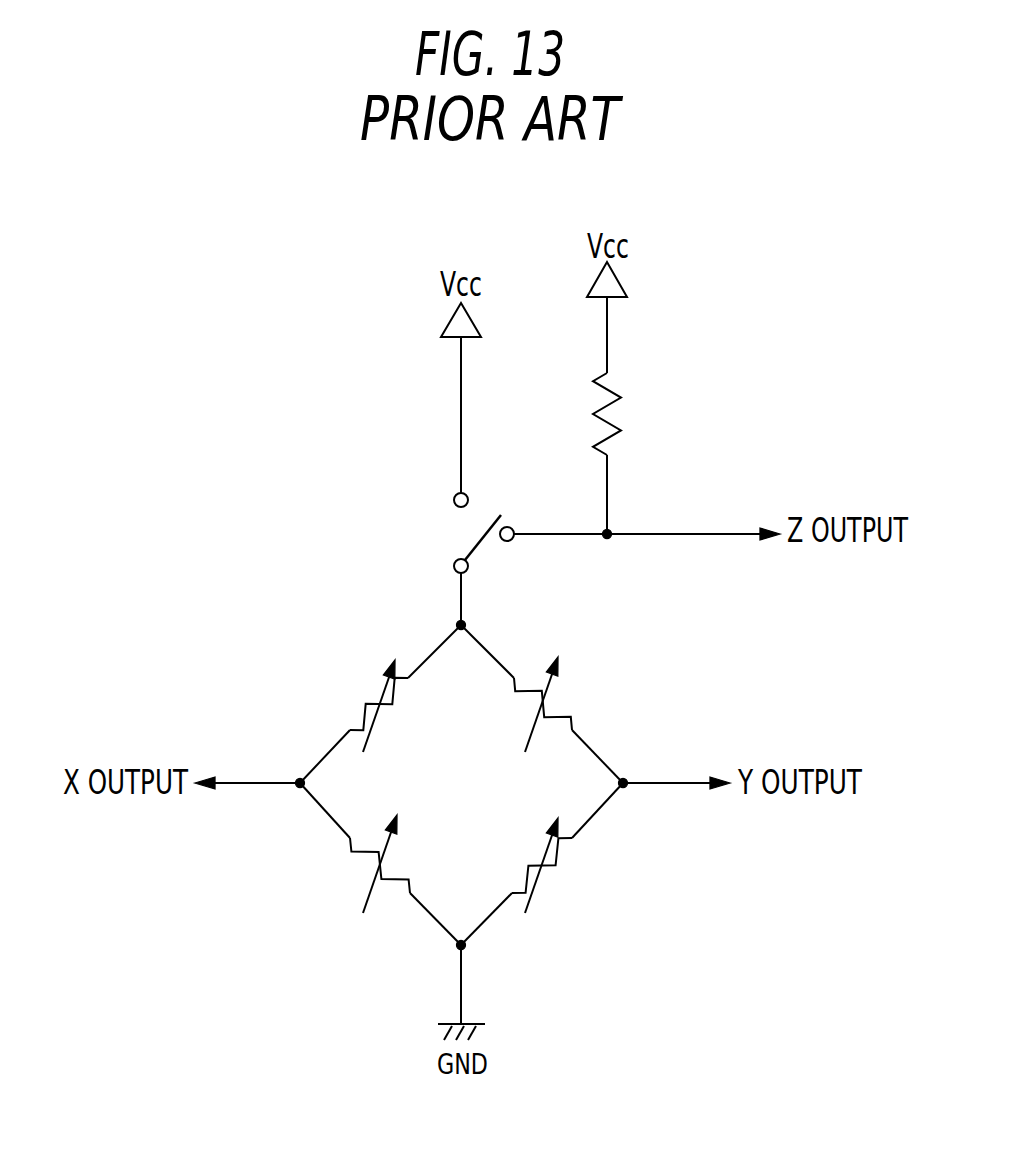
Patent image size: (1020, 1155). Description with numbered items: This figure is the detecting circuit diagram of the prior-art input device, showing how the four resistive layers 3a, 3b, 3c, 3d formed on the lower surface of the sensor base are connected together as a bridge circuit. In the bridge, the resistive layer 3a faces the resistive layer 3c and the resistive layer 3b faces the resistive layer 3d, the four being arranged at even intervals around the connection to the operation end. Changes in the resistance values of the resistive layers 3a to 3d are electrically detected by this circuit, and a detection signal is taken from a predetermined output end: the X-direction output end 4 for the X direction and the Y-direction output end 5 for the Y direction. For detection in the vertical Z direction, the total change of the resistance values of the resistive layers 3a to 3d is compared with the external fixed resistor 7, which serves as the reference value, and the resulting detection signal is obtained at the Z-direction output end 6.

The resistive layer 3a is at (346, 724).
The resistive layer 3b is at (577, 724).
The resistive layer 3c is at (348, 842).
The resistive layer 3d is at (575, 842).
The X-direction output end 4 is at (230, 783).
The Y-direction output end 5 is at (662, 783).
The Z-direction output end 6 is at (712, 533).
The external fixed resistor 7 is at (600, 394).